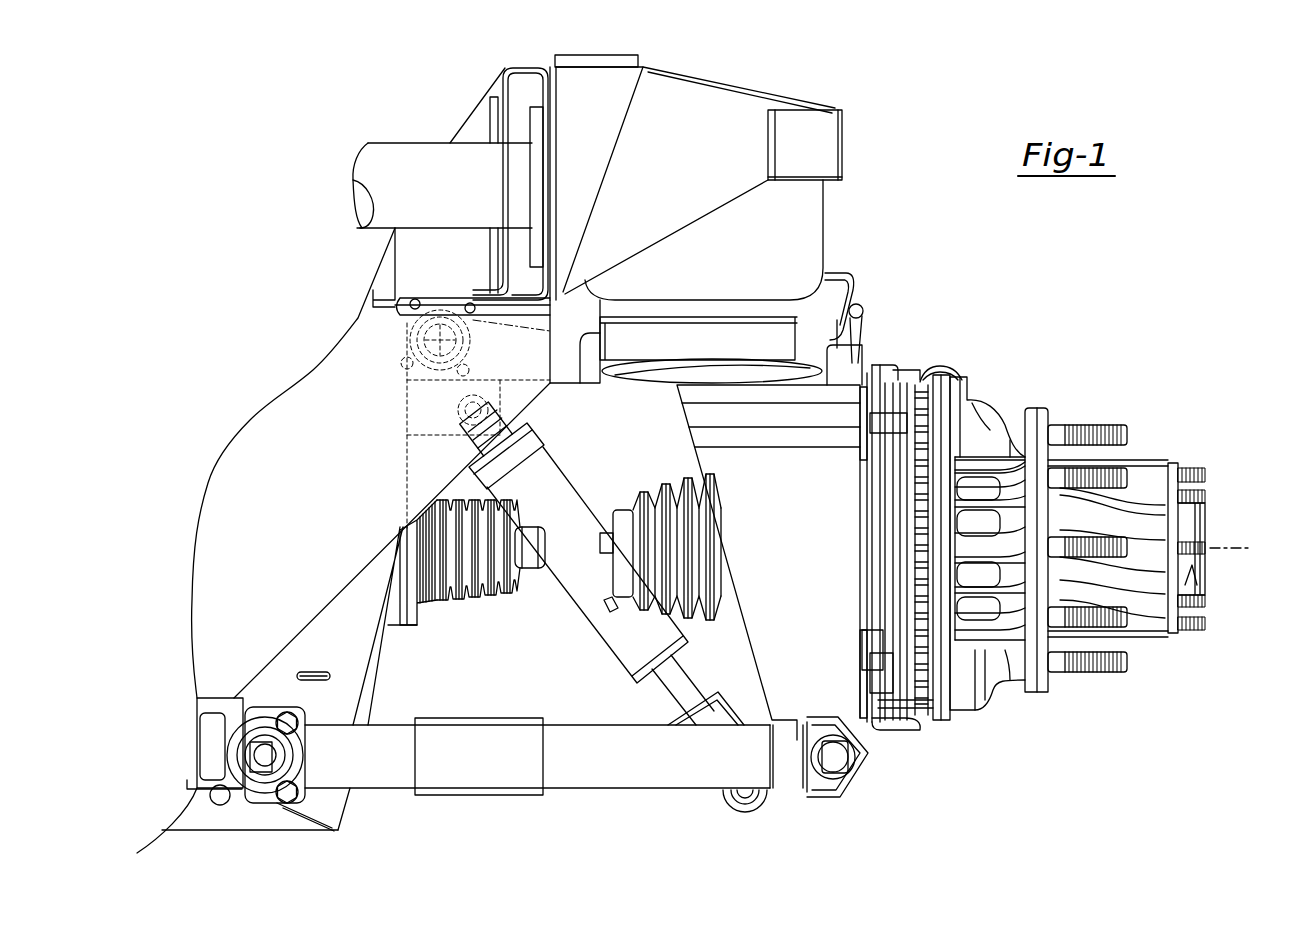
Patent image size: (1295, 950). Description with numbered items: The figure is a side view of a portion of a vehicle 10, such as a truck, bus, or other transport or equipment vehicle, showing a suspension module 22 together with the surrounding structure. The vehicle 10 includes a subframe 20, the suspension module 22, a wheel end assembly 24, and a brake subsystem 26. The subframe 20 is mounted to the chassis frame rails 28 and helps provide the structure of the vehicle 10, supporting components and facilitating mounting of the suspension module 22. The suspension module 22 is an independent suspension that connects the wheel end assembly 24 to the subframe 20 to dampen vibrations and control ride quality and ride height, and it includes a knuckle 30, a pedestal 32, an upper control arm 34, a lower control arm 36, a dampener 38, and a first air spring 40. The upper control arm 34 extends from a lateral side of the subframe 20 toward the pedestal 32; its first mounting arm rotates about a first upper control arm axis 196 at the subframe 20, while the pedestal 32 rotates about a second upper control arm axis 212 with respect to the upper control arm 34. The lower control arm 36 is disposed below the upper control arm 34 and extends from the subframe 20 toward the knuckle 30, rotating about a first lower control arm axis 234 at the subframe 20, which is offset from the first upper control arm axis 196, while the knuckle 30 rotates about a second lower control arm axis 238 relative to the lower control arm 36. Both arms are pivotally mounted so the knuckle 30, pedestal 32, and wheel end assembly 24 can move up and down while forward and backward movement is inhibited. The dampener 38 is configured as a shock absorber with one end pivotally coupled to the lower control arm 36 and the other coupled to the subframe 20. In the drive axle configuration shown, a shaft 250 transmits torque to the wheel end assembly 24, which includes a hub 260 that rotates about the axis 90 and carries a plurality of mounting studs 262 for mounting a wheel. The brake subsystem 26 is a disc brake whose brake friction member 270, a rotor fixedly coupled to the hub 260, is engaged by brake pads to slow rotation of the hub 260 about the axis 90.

The vehicle 10 is at (346, 111).
The subframe 20 is at (380, 677).
The suspension module 22 is at (884, 788).
The wheel end assembly 24 is at (1070, 703).
The brake subsystem 26 is at (918, 729).
The frame rails 28 is at (525, 72).
The knuckle 30 is at (750, 647).
The pedestal 32 is at (854, 276).
The upper control arm 34 is at (552, 387).
The lower control arm 36 is at (483, 793).
The dampener 38 is at (614, 632).
The first air spring 40 is at (731, 254).
The axis 90 is at (1240, 550).
The first upper control arm axis 196 is at (443, 340).
The second upper control arm axis 212 is at (848, 335).
The first lower control arm axis 234 is at (258, 754).
The second lower control arm axis 238 is at (830, 776).
The shaft 250 is at (603, 527).
The hub 260 is at (1045, 408).
The mounting studs 262 is at (1128, 480).
The brake friction member 270 is at (932, 375).